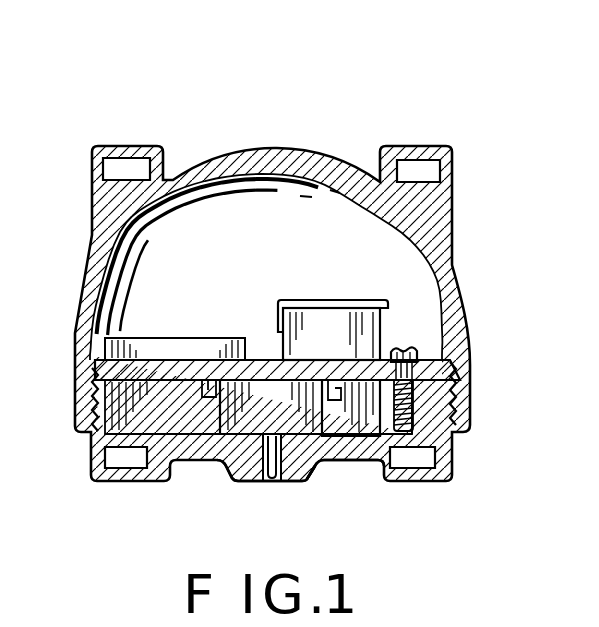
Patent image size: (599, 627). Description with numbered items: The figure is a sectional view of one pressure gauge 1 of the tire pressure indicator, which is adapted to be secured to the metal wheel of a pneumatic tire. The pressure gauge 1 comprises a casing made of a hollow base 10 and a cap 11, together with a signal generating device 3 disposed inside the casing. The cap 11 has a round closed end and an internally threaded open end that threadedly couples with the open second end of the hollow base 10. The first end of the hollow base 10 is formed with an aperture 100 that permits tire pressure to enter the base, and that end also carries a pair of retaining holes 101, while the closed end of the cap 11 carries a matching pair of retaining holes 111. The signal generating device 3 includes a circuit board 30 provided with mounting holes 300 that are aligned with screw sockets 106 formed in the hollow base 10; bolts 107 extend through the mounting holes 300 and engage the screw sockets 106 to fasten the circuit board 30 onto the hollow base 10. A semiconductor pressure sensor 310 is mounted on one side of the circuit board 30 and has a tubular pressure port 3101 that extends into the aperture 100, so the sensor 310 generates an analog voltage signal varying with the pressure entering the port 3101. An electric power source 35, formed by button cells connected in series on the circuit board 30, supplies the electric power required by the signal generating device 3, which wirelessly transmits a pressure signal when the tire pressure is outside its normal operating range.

The pressure gauge 1 is at (283, 97).
The signal generating device 3 is at (252, 317).
The hollow base 10 is at (453, 456).
The cap 11 is at (470, 367).
The circuit board 30 is at (112, 388).
The electric power source 35 is at (376, 331).
The aperture 100 is at (272, 488).
The retaining holes 101 is at (122, 466).
The screw sockets 106 is at (418, 413).
The bolts 107 is at (430, 330).
The retaining holes 111 is at (127, 168).
The mounting holes 300 is at (462, 374).
The pressure sensor 310 is at (320, 462).
The tubular pressure port 3101 is at (305, 486).